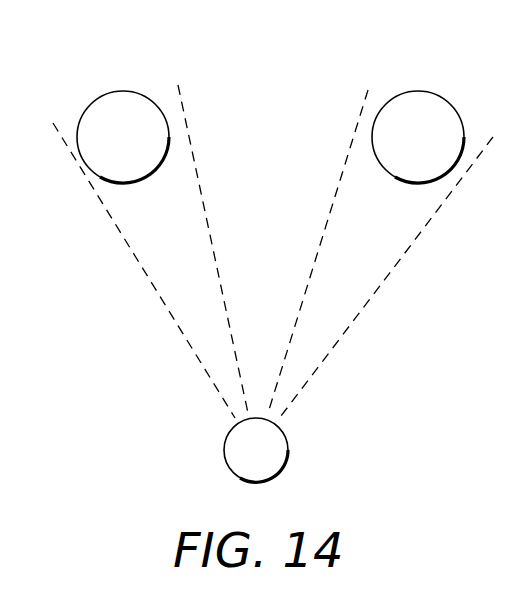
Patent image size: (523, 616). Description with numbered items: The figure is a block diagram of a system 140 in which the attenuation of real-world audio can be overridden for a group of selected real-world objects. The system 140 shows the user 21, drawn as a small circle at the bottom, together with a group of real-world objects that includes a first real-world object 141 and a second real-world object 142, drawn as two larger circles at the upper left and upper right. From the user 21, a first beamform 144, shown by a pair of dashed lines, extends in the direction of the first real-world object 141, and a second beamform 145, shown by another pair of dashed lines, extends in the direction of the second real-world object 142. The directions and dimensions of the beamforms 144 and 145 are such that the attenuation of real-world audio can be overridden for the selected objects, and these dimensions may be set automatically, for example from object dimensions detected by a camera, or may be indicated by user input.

The system 140 is at (104, 384).
The first real-world object 141 is at (123, 90).
The second real-world object 142 is at (418, 90).
The first beamform 144 is at (130, 253).
The second beamform 145 is at (382, 285).
The user 21 is at (288, 450).